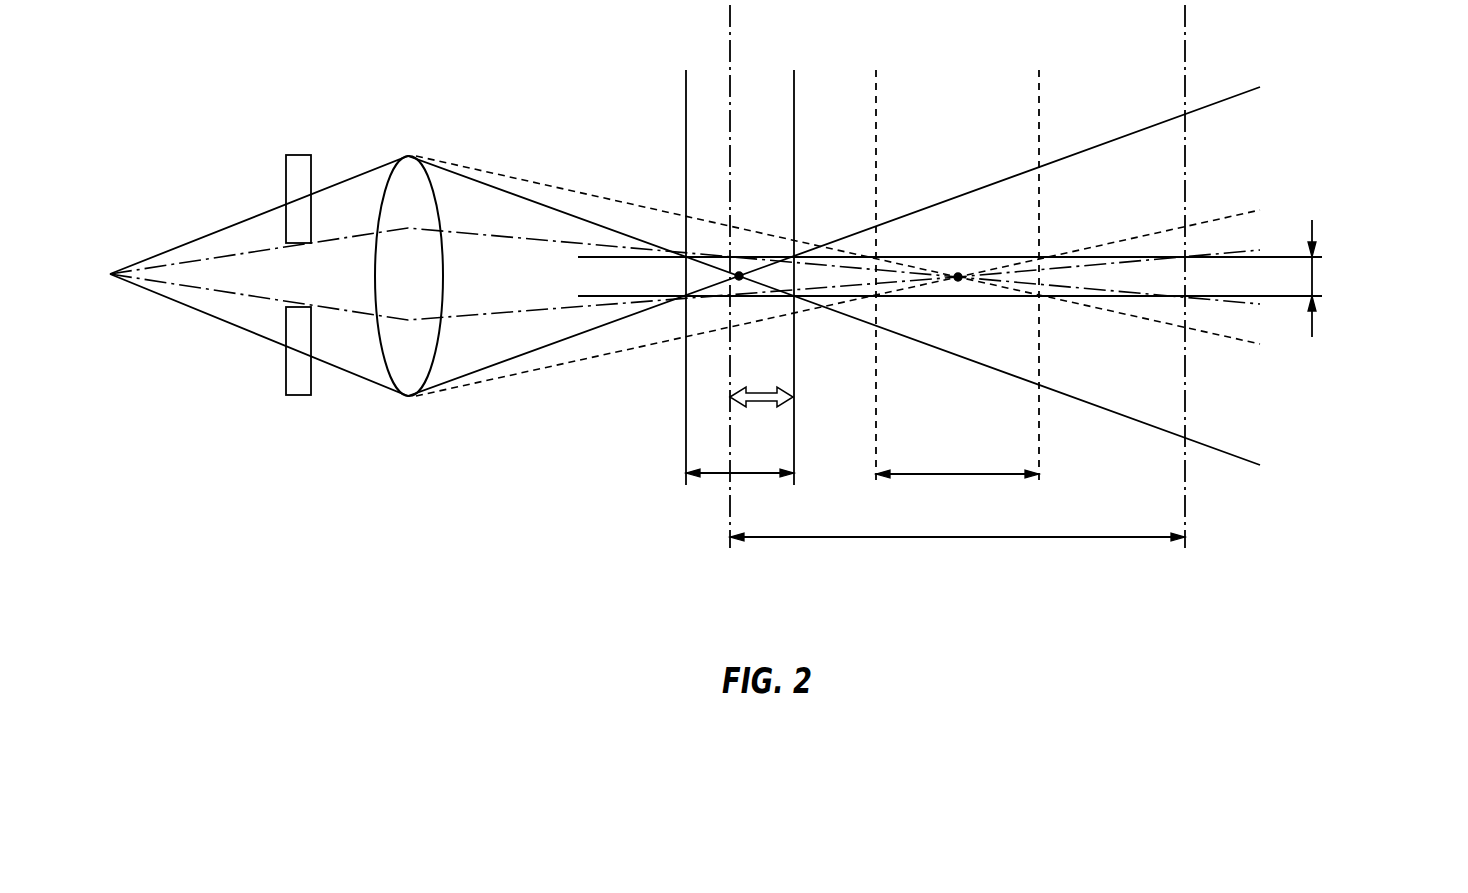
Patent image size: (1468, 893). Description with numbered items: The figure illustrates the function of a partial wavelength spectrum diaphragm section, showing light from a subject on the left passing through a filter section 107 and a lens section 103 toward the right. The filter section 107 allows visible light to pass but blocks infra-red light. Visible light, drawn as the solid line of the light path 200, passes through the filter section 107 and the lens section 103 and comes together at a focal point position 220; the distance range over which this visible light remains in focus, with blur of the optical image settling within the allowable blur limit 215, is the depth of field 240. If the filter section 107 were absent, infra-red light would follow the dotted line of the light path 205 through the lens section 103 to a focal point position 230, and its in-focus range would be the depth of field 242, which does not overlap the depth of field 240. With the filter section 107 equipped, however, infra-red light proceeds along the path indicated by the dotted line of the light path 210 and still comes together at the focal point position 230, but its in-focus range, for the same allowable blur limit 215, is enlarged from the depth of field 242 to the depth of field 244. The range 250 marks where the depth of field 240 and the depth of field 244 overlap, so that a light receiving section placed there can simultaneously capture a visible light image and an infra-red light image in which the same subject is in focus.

The lens section 103 is at (405, 182).
The filter section 107 is at (298, 397).
The light path 200 is at (504, 190).
The light path 205 is at (560, 186).
The light path 210 is at (493, 237).
The allowable blur limit 215 is at (1313, 276).
The focal point position 220 is at (740, 272).
The focal point position 230 is at (958, 273).
The depth of field 240 is at (758, 470).
The depth of field 242 is at (960, 477).
The depth of field 244 is at (960, 540).
The range 250 is at (767, 391).